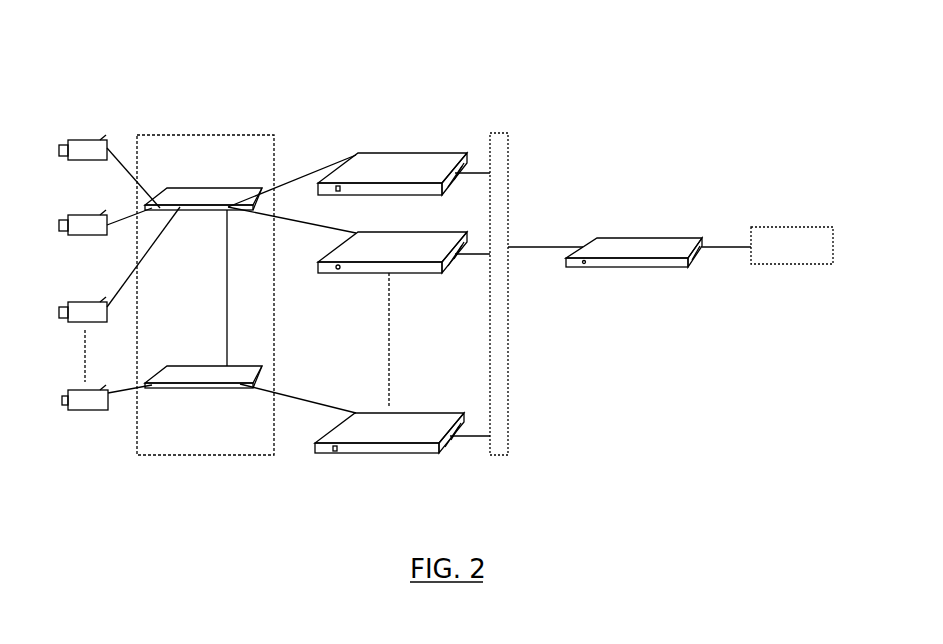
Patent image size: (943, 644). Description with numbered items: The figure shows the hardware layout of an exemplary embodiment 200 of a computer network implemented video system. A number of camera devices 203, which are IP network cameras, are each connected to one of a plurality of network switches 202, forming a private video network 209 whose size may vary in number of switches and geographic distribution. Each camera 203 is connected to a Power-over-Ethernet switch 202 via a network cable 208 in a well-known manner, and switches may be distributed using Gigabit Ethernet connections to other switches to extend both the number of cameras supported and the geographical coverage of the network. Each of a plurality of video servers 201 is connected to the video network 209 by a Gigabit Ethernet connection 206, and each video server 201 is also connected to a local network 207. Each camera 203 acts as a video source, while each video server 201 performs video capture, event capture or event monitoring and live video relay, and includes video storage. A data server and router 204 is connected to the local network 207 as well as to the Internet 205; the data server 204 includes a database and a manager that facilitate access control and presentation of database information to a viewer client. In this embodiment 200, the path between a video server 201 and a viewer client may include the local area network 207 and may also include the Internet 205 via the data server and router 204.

The exemplary embodiment 200 is at (612, 128).
The video server 201 is at (400, 152).
The network switch 202 is at (190, 190).
The camera device 203 is at (95, 138).
The data server and router 204 is at (624, 238).
The Internet 205 is at (780, 227).
The Gigabit Ethernet connection 206 is at (290, 178).
The local network 207 is at (508, 347).
The network cable 208 is at (113, 298).
The video network 209 is at (243, 457).